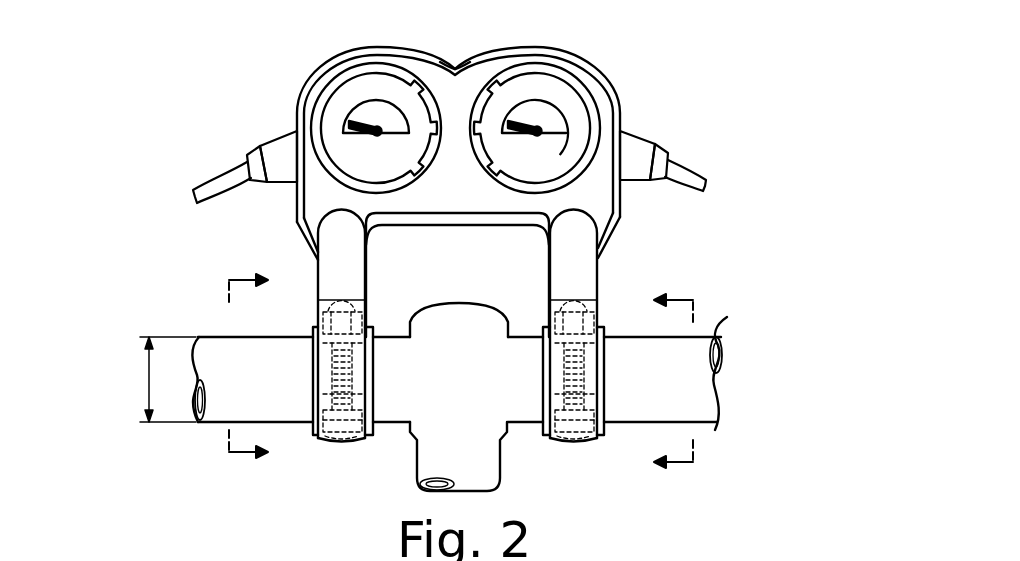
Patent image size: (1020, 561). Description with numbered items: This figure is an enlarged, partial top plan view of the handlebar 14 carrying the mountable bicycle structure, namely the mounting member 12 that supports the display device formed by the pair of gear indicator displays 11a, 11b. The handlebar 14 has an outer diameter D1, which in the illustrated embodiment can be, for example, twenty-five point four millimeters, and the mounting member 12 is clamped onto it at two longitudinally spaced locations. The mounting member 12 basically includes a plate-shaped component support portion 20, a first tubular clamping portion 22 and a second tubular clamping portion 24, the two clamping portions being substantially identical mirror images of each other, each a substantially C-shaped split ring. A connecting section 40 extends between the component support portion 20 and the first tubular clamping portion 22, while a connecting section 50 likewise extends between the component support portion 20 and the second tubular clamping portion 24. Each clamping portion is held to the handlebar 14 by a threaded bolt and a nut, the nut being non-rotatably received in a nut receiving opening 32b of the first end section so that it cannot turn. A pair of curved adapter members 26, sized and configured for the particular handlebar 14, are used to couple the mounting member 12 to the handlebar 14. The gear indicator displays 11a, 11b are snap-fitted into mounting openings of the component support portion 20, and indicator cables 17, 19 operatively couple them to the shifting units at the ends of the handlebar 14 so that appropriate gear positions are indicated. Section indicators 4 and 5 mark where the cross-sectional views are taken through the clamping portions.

The gear indicator display 11a is at (334, 80).
The gear indicator display 11b is at (578, 73).
The mounting member 12 is at (625, 100).
The handlebar 14 is at (722, 337).
The indicator cable 17 is at (207, 182).
The indicator cable 19 is at (698, 176).
The component support portion 20 is at (453, 85).
The first tubular clamping portion 22 is at (352, 449).
The second tubular clamping portion 24 is at (573, 449).
The adapter member 26 is at (305, 437).
The nut receiving opening 32b is at (318, 323).
The connecting section 40 is at (366, 272).
The connecting section 50 is at (598, 272).
The section line 4- 4 is at (258, 367).
The section line 5- 5 is at (662, 382).
The outer diameter D1 is at (166, 379).